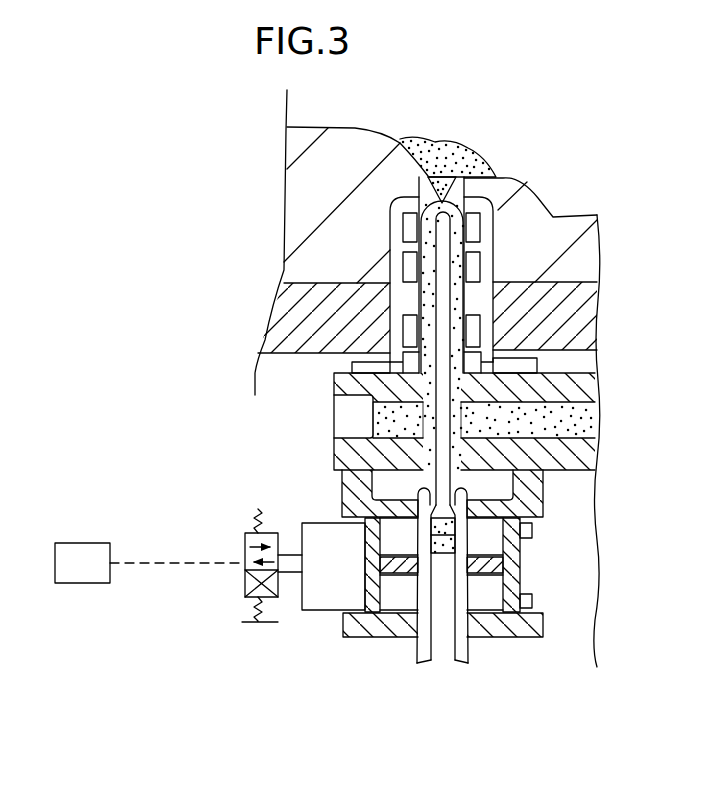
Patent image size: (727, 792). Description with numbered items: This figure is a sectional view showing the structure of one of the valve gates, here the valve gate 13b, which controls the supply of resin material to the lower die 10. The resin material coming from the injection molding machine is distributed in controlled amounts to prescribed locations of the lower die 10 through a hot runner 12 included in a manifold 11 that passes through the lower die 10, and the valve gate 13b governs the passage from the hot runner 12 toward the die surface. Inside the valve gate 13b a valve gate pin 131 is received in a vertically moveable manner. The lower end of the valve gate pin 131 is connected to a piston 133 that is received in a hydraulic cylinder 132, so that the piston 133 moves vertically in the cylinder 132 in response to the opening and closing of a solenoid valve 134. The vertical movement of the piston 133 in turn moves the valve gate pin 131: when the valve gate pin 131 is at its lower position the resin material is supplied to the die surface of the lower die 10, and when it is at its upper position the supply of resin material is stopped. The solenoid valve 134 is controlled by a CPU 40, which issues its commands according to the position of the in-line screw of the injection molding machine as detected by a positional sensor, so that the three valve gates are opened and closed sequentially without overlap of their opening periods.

The lower die 10 is at (312, 180).
The manifold 11 is at (590, 383).
The hot runner 12 is at (570, 415).
The valve gate 13b is at (311, 426).
The valve gate pin 131 is at (443, 450).
The hydraulic cylinder 132 is at (505, 528).
The piston 133 is at (497, 570).
The solenoid valve 134 is at (245, 577).
The CPU 40 is at (85, 572).